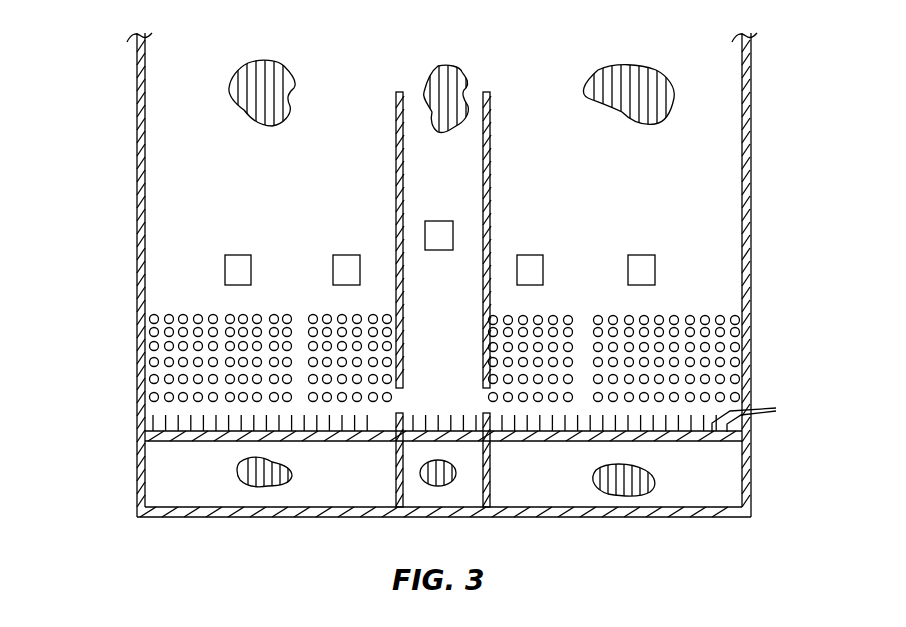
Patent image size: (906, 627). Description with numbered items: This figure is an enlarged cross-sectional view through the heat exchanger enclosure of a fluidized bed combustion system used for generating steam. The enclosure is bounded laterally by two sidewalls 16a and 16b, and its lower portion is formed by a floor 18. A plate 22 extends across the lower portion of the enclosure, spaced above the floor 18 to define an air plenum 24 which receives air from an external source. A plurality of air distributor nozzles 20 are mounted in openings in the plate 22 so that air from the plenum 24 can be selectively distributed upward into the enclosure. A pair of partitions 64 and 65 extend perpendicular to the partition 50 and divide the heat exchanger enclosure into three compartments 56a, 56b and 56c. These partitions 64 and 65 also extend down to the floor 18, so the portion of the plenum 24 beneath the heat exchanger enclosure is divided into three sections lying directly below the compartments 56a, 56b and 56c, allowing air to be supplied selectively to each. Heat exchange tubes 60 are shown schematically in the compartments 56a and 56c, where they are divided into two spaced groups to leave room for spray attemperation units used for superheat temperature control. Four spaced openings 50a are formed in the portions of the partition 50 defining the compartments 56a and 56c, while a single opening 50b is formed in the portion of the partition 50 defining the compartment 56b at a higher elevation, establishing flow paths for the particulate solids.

The sidewall 16a is at (137, 218).
The sidewall 16b is at (752, 150).
The floor 18 is at (300, 518).
The air distributor nozzles 20 is at (353, 441).
The plate 22 is at (760, 415).
The air plenum 24 is at (203, 481).
The partition 50 is at (279, 62).
The openings 50a is at (238, 254).
The opening 50b is at (440, 250).
The compartment 56a is at (206, 284).
The compartment 56b is at (463, 361).
The compartment 56c is at (720, 285).
The heat exchange tubes 60 is at (273, 313).
The partition 64 is at (395, 148).
The partition 65 is at (490, 152).